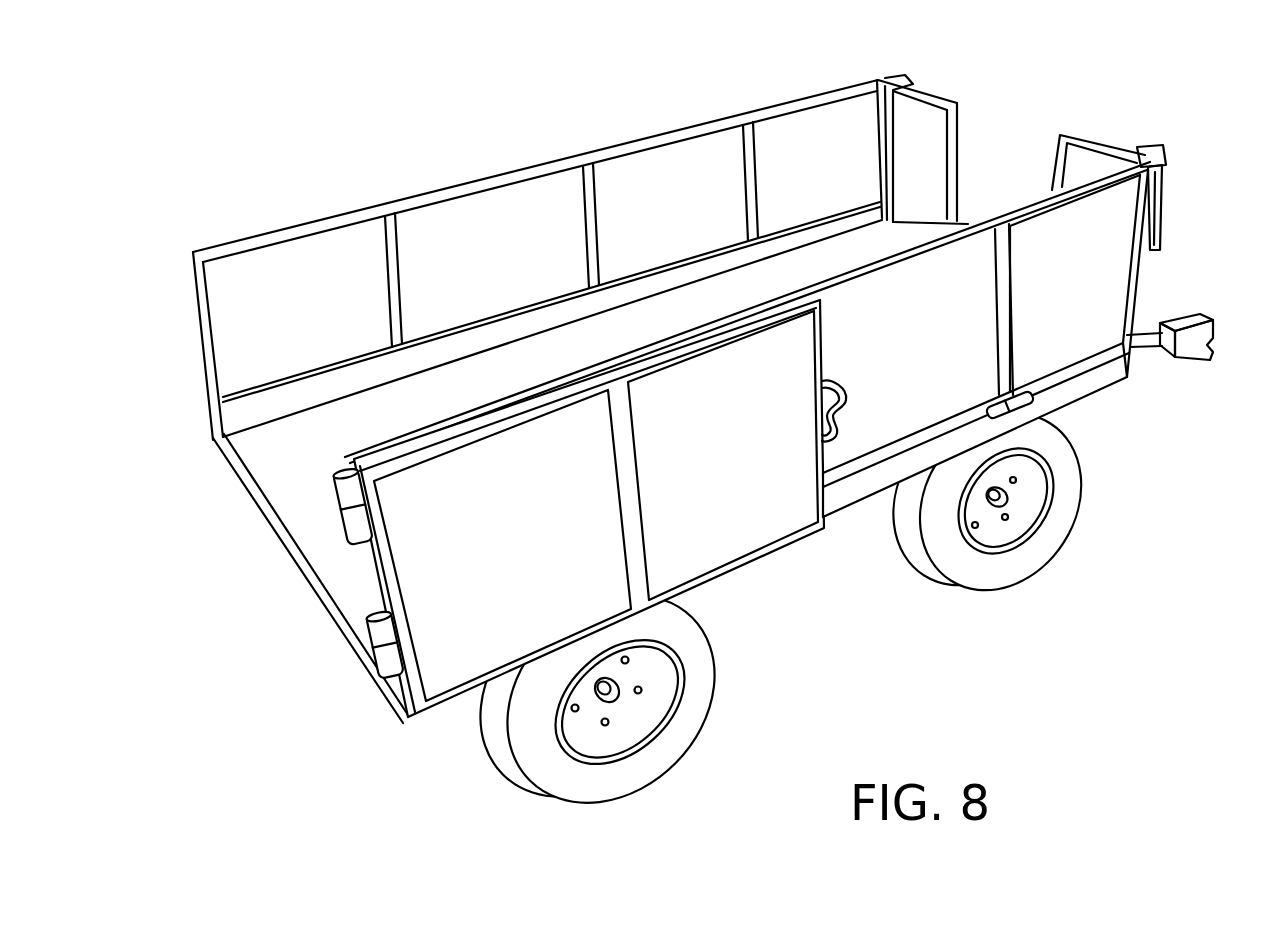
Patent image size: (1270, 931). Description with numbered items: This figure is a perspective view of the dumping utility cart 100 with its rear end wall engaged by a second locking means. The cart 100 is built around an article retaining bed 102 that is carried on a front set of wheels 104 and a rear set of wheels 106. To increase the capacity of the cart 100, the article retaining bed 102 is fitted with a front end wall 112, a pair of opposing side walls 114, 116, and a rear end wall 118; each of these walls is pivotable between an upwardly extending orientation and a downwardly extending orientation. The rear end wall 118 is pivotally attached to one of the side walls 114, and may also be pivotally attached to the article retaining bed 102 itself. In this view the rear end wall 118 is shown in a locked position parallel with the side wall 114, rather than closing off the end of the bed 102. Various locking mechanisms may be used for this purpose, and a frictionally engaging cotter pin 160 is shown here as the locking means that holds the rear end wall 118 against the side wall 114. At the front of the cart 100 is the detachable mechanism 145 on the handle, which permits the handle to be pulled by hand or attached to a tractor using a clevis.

The dumping utility cart 100 is at (716, 457).
The article retaining bed 102 is at (340, 600).
The front set of wheels 104 is at (1062, 507).
The rear set of wheels 106 is at (673, 728).
The front end wall 112 is at (1082, 166).
The side wall 114 is at (1080, 330).
The side wall 116 is at (788, 130).
The rear end wall 118 is at (748, 537).
The detachable mechanism 145 is at (1197, 353).
The frictionally engaging cotter pin 160 is at (850, 393).